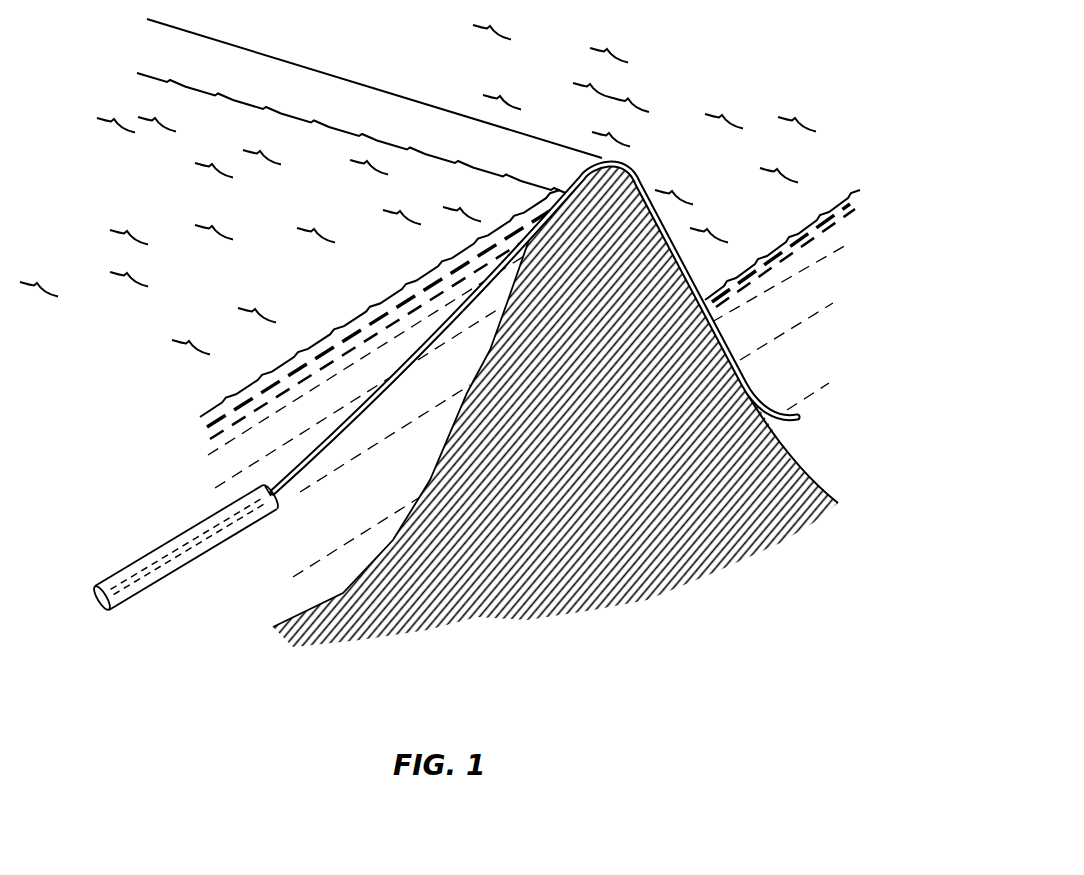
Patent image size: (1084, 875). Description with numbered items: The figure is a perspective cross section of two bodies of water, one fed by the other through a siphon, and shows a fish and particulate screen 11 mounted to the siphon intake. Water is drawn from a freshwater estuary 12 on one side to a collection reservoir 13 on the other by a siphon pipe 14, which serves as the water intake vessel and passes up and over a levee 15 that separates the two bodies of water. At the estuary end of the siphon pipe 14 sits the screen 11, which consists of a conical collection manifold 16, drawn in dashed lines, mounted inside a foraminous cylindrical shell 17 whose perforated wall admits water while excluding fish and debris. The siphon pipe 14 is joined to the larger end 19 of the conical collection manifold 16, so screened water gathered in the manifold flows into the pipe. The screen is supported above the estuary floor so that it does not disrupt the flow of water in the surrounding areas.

The fish and particulate screen 11 is at (121, 527).
The freshwater estuary 12 is at (300, 211).
The collection reservoir 13 is at (687, 96).
The siphon pipe 14 is at (388, 382).
The levee 15 is at (683, 504).
The conical collection manifold 16 is at (160, 571).
The foraminous cylindrical shell 17 is at (195, 520).
The larger end 19 is at (268, 498).